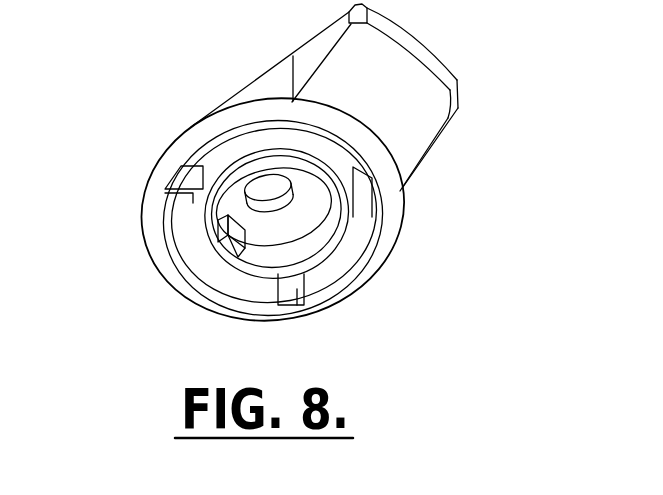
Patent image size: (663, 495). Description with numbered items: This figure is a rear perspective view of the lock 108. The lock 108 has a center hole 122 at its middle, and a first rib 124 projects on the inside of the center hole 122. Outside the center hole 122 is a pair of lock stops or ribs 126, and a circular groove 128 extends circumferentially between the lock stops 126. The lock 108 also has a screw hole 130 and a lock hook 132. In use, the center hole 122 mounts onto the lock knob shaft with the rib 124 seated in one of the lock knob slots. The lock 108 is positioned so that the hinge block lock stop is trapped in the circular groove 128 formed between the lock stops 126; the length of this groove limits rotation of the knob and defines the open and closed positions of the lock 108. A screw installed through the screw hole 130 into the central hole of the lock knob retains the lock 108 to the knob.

The lock 108 is at (127, 117).
The center hole 122 is at (310, 220).
The first rib 124 is at (245, 237).
The lock stops 126 is at (174, 200).
The circular groove 128 is at (222, 298).
The screw hole 130 is at (273, 185).
The lock hook 132 is at (383, 80).